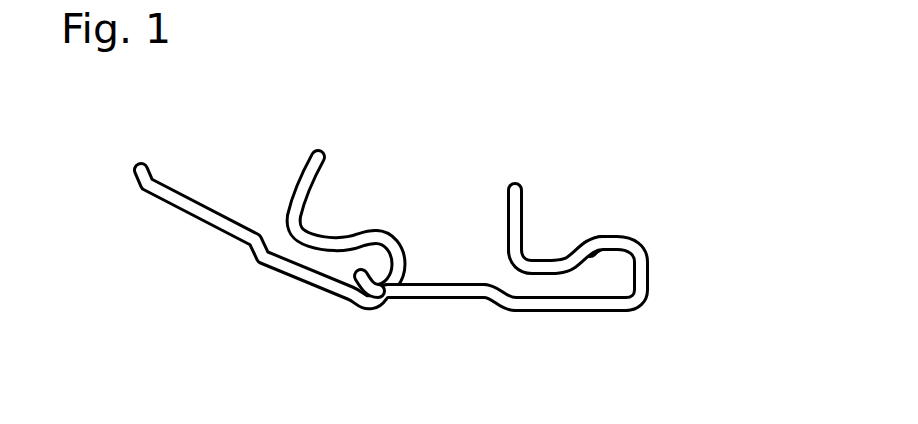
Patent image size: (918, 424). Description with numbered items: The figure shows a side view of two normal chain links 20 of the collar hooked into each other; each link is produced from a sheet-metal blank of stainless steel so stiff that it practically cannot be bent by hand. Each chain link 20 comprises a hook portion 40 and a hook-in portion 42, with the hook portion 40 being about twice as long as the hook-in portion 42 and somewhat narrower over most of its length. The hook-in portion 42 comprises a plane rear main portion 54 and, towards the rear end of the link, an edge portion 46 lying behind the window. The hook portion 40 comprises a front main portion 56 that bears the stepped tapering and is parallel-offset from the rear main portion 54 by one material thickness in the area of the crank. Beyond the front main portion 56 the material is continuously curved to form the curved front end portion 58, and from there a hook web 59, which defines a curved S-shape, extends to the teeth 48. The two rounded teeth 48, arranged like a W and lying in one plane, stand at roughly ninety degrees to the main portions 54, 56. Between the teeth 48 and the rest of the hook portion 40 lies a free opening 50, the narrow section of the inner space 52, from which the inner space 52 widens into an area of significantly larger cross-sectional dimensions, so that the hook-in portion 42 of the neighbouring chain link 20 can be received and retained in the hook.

The normal chain link 20 is at (283, 298).
The hook portion 40 is at (460, 233).
The hook-in portion 42 is at (433, 322).
The edge portion 46 is at (360, 275).
The teeth 48 is at (317, 147).
The free opening 50 is at (277, 238).
The inner space 52 is at (608, 268).
The rear main portion 54 is at (494, 252).
The front main portion 56 is at (567, 308).
The curved front end portion 58 is at (684, 200).
The hook web 59 is at (607, 237).